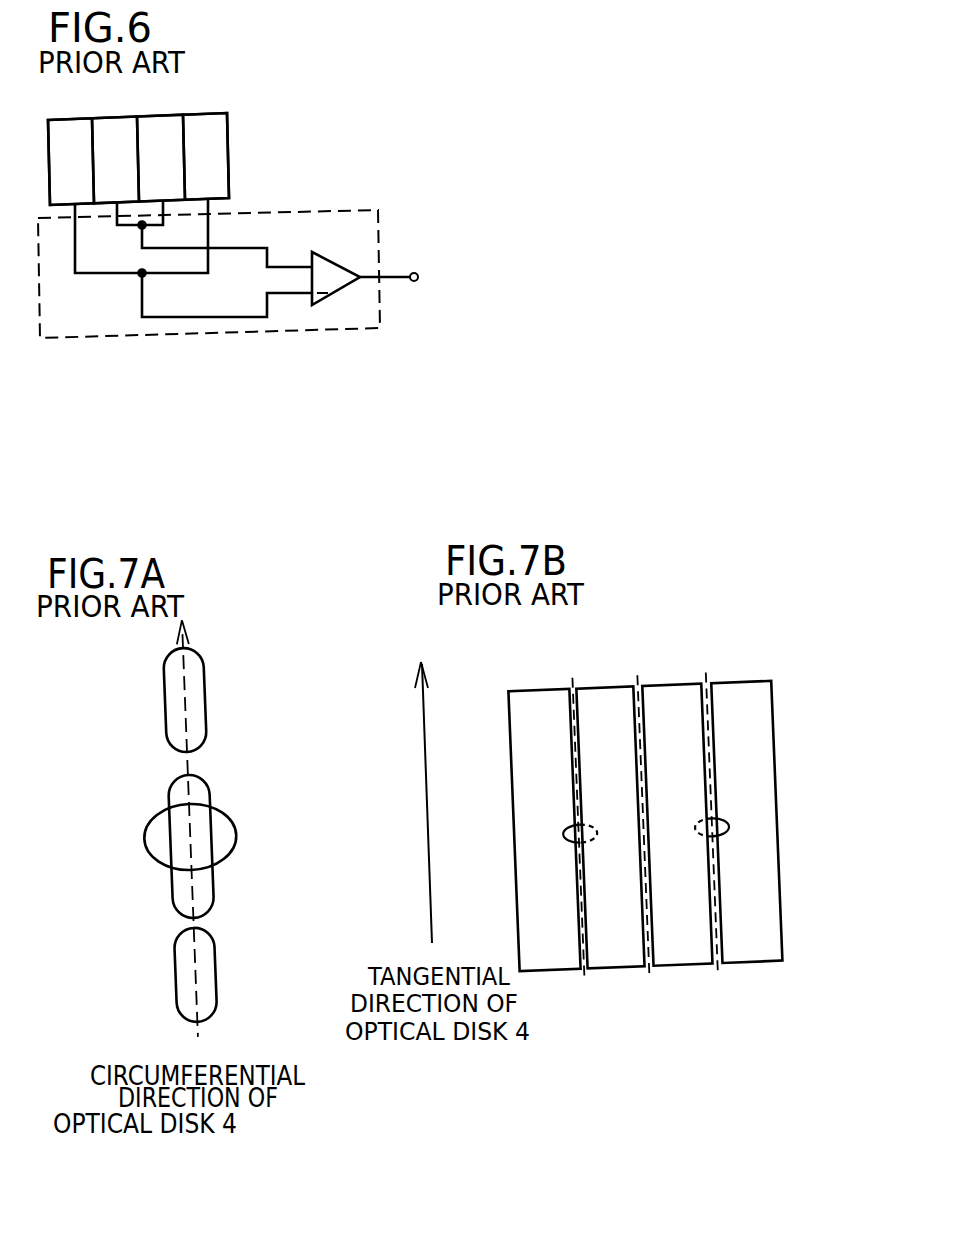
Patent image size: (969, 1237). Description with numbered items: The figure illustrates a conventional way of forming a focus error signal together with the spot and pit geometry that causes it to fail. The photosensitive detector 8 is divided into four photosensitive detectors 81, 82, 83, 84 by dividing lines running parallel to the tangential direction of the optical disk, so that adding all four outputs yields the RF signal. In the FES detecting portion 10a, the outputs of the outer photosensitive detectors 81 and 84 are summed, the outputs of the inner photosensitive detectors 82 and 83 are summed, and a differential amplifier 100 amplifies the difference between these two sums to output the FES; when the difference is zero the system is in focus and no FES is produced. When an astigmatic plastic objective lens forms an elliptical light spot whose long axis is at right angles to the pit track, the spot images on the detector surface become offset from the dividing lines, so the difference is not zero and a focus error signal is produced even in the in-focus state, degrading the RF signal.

In FIG. 6, the photosensitive detector 8 is at (229, 144).
In FIG. 7B, the photosensitive detector 8 is at (782, 1008).
In FIG. 6, the photosensitive detector 81 is at (71, 161).
In FIG. 6, the photosensitive detector 82 is at (115, 160).
In FIG. 6, the photosensitive detector 83 is at (161, 158).
In FIG. 6, the photosensitive detector 84 is at (206, 156).
In FIG. 6, the FES detecting portion 10a is at (253, 248).
In FIG. 6, the differential amplifier 100 is at (338, 277).